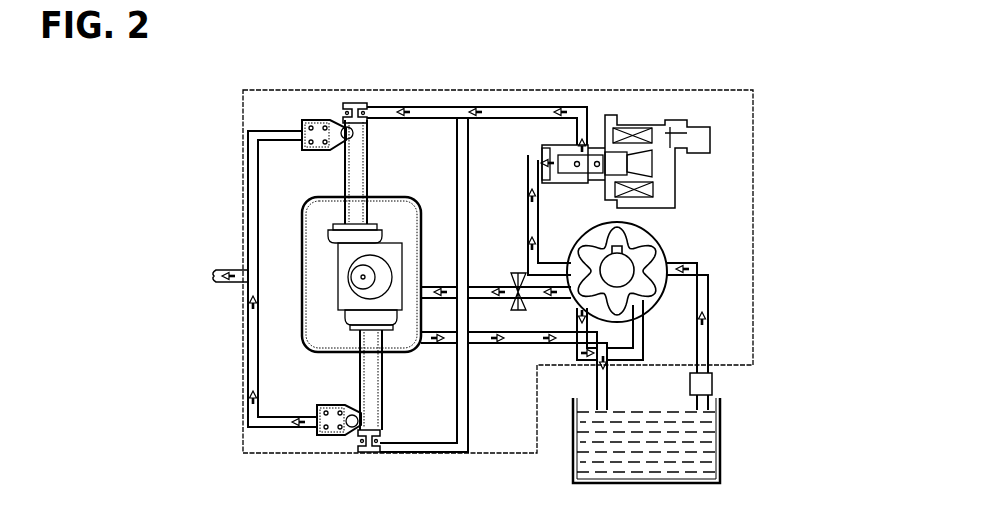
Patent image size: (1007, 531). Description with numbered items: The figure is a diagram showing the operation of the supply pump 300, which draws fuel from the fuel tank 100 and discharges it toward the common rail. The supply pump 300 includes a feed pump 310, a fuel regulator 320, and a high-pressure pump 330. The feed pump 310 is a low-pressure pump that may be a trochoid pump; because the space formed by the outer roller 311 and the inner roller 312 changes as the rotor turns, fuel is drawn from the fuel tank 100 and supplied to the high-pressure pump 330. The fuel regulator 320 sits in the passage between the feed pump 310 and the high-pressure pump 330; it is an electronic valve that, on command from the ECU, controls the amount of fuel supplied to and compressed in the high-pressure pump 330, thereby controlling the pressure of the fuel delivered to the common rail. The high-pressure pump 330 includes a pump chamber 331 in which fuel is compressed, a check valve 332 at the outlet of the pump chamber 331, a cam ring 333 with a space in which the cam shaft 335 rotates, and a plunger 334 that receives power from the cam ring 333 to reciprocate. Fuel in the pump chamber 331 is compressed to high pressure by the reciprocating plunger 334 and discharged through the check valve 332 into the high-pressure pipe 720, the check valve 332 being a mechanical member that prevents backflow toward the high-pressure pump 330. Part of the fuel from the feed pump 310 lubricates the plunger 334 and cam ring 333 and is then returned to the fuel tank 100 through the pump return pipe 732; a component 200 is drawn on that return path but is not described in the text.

The fuel tank 100 is at (712, 453).
The filter 200 is at (712, 384).
The supply pump 300 is at (500, 89).
The feed pump 310 is at (645, 232).
The outer roller 311 is at (637, 233).
The inner roller 312 is at (636, 254).
The fuel regulator 320 is at (682, 127).
The high-pressure pump 330 is at (303, 203).
The pump chamber 331 is at (345, 125).
The check valve 332 is at (310, 128).
The cam ring 333 is at (340, 310).
The plunger 334 is at (357, 170).
The cam shaft 335 is at (357, 277).
The high-pressure pipe 720 is at (228, 270).
The pump return pipe 732 is at (598, 377).